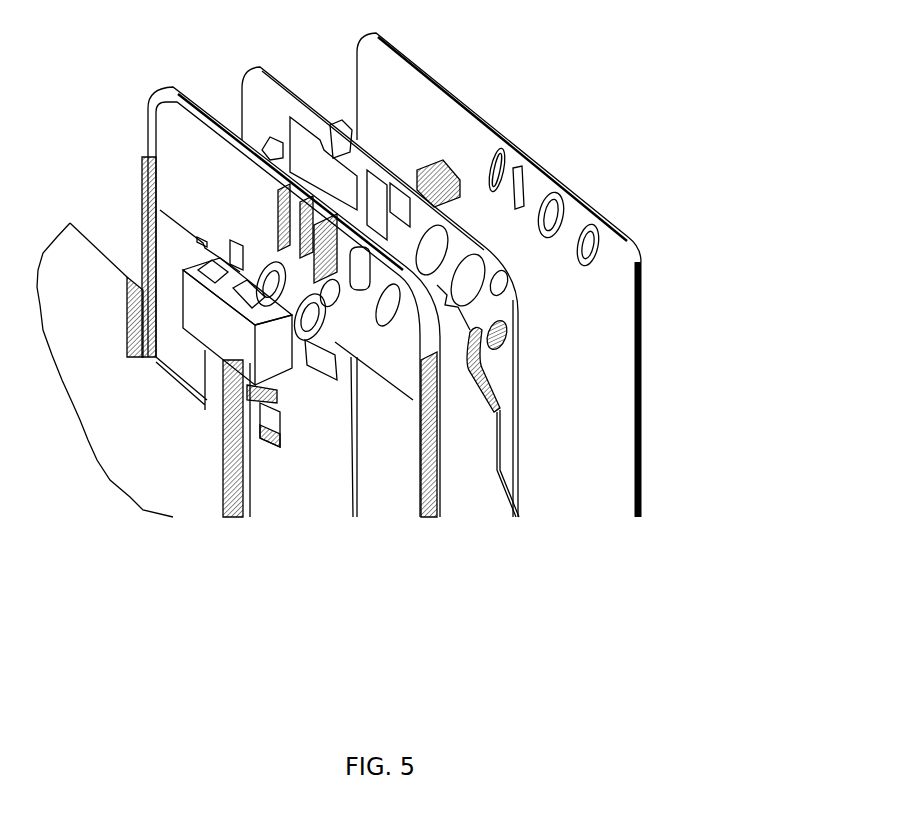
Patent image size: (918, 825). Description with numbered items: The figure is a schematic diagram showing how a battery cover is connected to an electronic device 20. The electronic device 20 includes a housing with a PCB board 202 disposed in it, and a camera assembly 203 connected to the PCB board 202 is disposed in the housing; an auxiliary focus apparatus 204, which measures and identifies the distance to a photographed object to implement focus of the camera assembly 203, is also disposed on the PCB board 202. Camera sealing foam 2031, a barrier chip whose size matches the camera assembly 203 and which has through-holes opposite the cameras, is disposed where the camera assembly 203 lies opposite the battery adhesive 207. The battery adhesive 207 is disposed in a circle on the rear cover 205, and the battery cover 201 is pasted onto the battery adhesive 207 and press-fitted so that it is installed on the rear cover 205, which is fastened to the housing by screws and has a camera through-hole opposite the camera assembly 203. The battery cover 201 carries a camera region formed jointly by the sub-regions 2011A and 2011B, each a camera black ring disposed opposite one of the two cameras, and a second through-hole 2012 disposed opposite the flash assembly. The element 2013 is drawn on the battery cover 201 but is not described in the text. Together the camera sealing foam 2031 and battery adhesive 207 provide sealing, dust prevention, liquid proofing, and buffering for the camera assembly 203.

The electronic device 20 is at (697, 592).
The battery cover 201 is at (641, 363).
The sub-region of camera region (camera black ring) 2011A is at (587, 243).
The sub-region of camera region (camera black ring) 2011B is at (560, 202).
The second through-hole 2012 is at (503, 153).
The opening 2013 is at (520, 168).
The PCB board 202 is at (183, 460).
The camera assembly 203 is at (276, 432).
The camera sealing foam 2031 is at (323, 358).
The auxiliary focus apparatus 204 is at (130, 350).
The rear cover 205 is at (441, 395).
The battery adhesive 207 is at (512, 370).